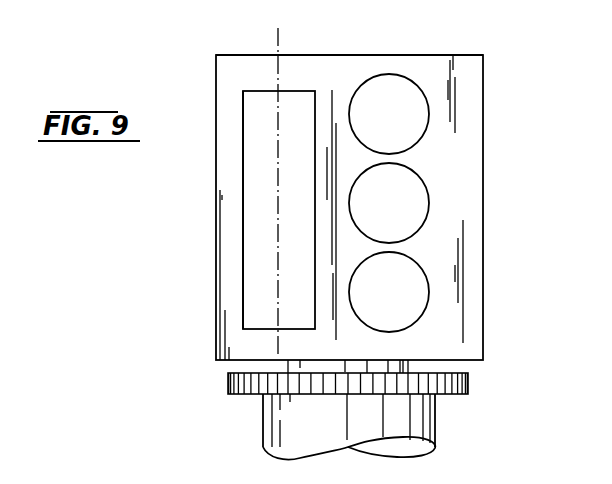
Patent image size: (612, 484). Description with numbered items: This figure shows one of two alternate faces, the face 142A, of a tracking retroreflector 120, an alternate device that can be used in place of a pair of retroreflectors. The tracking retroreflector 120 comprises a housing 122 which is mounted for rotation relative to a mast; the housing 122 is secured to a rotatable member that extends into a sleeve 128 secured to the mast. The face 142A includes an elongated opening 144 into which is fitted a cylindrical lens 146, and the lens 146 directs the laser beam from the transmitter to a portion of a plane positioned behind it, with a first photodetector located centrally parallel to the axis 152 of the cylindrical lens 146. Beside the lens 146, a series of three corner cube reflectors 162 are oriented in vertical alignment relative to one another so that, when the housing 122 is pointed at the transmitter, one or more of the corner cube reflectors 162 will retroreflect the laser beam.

The tracking retroreflector 120 is at (602, 38).
The housing 122 is at (483, 298).
The face 142A is at (428, 70).
The elongated opening 144 is at (316, 105).
The cylindrical lens 146 is at (262, 216).
The axis 152 is at (278, 37).
The corner cube reflectors 162 is at (418, 263).
The sleeve 128 is at (273, 430).